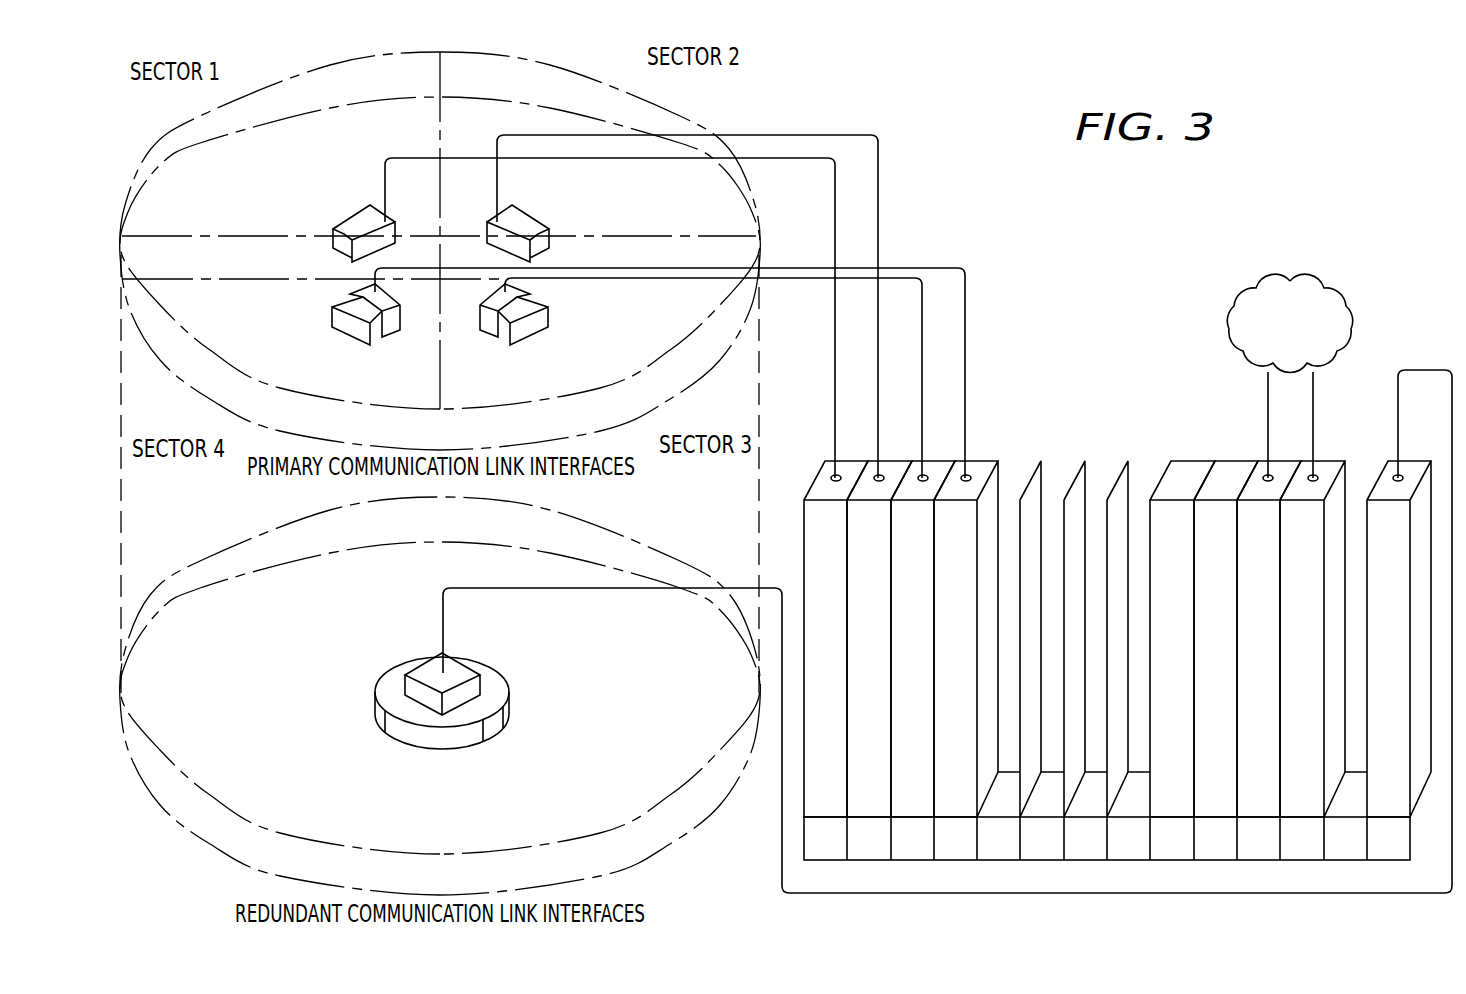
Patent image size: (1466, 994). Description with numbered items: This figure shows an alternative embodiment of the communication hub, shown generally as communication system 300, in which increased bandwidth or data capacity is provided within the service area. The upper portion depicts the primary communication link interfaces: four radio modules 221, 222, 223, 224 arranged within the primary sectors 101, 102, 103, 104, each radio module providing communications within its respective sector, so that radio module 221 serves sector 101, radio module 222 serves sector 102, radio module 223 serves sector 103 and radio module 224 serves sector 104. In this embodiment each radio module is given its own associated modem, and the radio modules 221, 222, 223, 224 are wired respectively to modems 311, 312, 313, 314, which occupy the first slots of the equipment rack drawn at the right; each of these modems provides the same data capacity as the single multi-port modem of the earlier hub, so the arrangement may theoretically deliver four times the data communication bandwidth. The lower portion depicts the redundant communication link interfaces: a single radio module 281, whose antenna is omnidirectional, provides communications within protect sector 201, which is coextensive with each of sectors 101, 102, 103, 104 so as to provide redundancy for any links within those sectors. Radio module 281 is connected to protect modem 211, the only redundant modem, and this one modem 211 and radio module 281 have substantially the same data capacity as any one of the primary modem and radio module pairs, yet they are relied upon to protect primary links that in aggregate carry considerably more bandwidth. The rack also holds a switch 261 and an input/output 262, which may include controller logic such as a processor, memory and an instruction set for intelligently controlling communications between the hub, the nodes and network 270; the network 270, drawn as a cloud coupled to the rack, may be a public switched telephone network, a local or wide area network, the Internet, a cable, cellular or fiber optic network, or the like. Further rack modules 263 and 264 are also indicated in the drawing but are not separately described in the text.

The sector 101 is at (188, 137).
The sector 102 is at (680, 123).
The sector 103 is at (680, 330).
The sector 104 is at (200, 335).
The protect sector 201 is at (205, 552).
The protect modem 211 is at (1410, 465).
The radio module 221 is at (338, 208).
The radio module 222 is at (564, 215).
The radio module 223 is at (566, 317).
The radio module 224 is at (314, 314).
The switch 261 is at (1183, 465).
The input/output (I/O) 262 is at (1227, 465).
The OC-3C main I/O card 263 is at (1200, 458).
The OC-3C protect I/O card 264 is at (1328, 465).
The network 270 is at (1292, 268).
The radio module 281 is at (392, 680).
The communication system 300 is at (1067, 229).
The modem 311 is at (823, 477).
The modem 312 is at (893, 462).
The modem 313 is at (935, 462).
The modem 314 is at (990, 462).